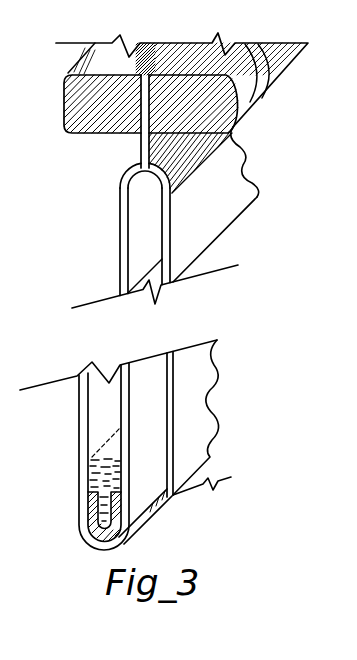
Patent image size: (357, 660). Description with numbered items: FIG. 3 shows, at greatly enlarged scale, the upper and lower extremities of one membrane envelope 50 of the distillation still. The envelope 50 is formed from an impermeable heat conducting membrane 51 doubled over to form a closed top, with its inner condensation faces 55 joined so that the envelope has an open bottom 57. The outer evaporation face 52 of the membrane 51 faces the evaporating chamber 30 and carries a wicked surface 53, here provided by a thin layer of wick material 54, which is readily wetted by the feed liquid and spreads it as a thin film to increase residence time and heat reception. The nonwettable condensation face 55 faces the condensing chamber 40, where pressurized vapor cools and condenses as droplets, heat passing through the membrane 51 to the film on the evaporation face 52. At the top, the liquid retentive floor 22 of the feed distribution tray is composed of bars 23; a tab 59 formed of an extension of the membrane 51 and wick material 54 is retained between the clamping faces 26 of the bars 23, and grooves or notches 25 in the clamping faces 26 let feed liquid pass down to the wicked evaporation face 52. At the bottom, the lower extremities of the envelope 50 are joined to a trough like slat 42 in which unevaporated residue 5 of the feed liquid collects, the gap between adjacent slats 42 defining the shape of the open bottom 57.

The liquid retentive floor 22 is at (134, 62).
The bars 23 is at (238, 119).
The grooves or notches 25 is at (247, 52).
The clamping faces 26 is at (280, 72).
The tabs 59 is at (141, 158).
The condensing chamber 40 is at (138, 228).
The envelope 50 is at (223, 208).
The evaporation face 52 is at (241, 205).
The wicked surface 53 is at (187, 254).
The wick material 54 is at (174, 284).
The membrane 51 is at (160, 296).
The evaporating chamber 30 is at (105, 416).
The unevaporated residue 5 is at (104, 465).
The trough like slats 42 is at (92, 514).
The condensation face 55 is at (162, 418).
The open bottom 57 is at (146, 527).